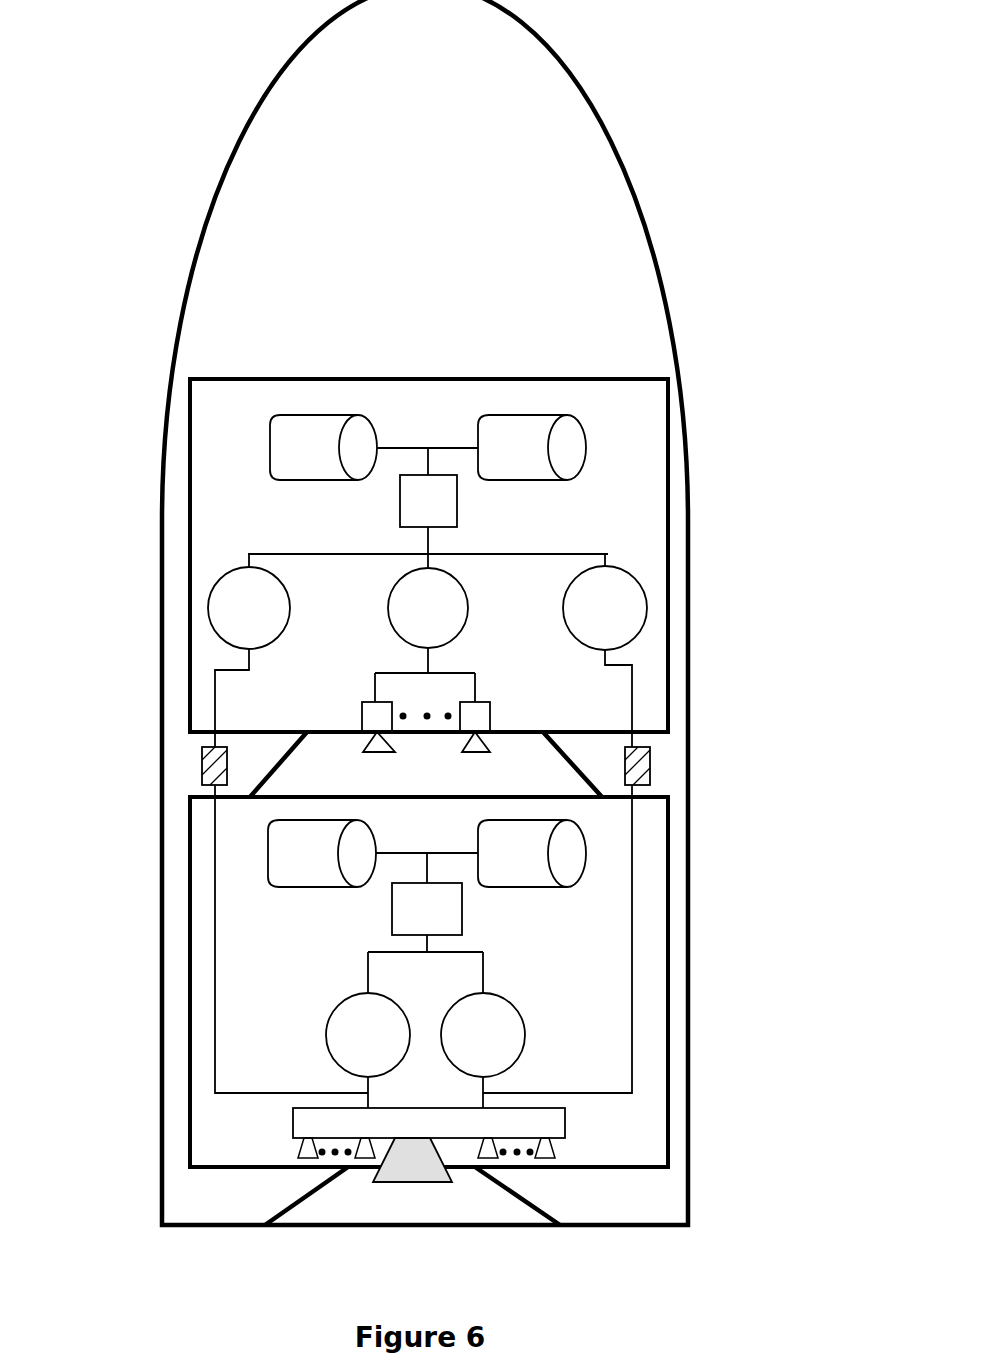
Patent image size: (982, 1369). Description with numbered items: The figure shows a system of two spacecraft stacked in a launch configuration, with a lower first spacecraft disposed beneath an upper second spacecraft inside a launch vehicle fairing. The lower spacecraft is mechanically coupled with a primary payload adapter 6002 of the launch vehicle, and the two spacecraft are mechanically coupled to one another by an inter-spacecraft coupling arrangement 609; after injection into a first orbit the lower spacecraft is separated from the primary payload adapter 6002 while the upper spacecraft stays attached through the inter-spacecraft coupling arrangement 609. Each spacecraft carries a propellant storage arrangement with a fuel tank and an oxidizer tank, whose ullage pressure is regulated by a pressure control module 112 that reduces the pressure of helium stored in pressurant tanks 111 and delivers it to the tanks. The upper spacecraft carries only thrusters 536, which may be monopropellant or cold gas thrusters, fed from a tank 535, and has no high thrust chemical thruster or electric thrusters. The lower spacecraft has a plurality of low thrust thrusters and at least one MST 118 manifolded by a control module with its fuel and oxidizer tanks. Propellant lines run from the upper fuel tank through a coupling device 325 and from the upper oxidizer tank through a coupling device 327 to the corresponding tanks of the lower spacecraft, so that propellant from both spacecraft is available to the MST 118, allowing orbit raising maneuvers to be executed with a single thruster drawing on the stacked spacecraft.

The pressurant tank 111 is at (427, 651).
The pressure control module 112 is at (428, 720).
The tank 535 is at (455, 576).
The thrusters 536 is at (362, 715).
The coupling device 325 is at (202, 763).
The coupling device 327 is at (650, 770).
The inter-spacecraft coupling arrangement 609 is at (577, 763).
The MST 118 is at (437, 1175).
The primary payload adapter 6002 is at (547, 1213).